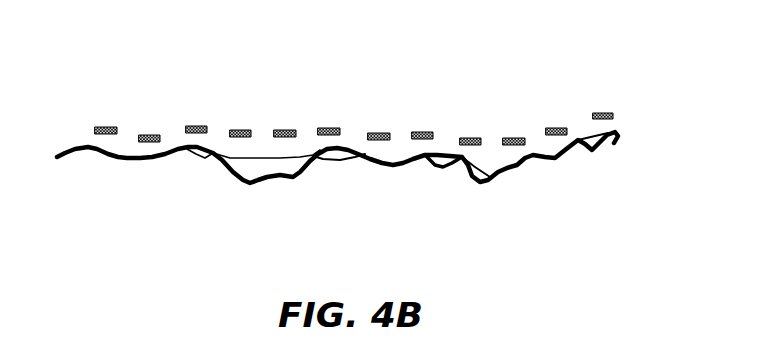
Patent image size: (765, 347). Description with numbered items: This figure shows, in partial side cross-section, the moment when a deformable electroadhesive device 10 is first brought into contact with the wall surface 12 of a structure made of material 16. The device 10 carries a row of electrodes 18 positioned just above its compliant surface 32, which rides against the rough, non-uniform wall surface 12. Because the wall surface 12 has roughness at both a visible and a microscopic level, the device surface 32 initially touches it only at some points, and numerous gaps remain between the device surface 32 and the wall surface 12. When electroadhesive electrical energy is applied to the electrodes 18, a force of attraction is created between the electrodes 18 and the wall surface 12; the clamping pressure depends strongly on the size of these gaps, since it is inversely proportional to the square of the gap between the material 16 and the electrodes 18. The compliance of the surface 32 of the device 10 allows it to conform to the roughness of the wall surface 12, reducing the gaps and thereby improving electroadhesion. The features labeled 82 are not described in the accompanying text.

The electroadhesive device 10 is at (426, 123).
The wall surface 12 is at (250, 184).
The material 16 is at (428, 230).
The electrodes 18 is at (153, 135).
The surface 32 is at (260, 157).
The voids 82 is at (207, 160).